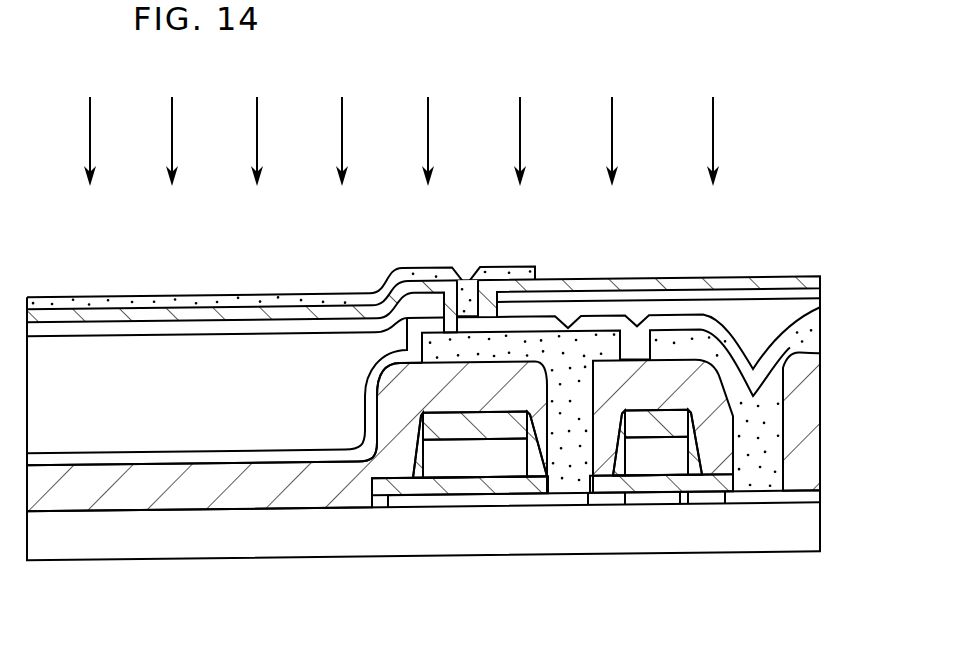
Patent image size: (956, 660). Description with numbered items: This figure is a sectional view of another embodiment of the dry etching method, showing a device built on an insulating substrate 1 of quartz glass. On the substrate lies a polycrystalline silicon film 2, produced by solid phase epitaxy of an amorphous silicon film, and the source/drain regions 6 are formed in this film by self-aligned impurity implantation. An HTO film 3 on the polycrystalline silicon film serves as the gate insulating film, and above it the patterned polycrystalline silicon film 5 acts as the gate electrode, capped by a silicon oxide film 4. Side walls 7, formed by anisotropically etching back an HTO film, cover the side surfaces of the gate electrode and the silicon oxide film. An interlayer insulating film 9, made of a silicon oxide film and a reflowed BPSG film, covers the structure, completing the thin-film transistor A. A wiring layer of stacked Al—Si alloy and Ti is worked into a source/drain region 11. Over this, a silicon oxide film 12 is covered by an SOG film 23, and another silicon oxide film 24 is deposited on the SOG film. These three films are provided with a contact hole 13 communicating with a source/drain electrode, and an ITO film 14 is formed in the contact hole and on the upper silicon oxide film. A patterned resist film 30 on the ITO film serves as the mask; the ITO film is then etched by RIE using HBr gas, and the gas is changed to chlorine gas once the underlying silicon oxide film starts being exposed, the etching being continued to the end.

The insulating substrate 1 is at (780, 537).
The polycrystalline silicon film 2 is at (657, 500).
The HTO film 3 is at (677, 483).
The silicon oxide film 4 is at (660, 417).
The polycrystalline silicon film 5 is at (705, 395).
The source/drain regions 6 is at (610, 500).
The side walls 7 is at (602, 395).
The interlayer insulating film 9 is at (407, 380).
The source/drain region 11 is at (537, 352).
The silicon oxide film 12 is at (380, 373).
The contact hole 13 is at (458, 276).
The ITO film 14 is at (267, 315).
The SOG film 23 is at (218, 363).
The silicon oxide film 24 is at (118, 330).
The patterned resist film 30 is at (290, 297).
The thin-film transistor A is at (637, 450).